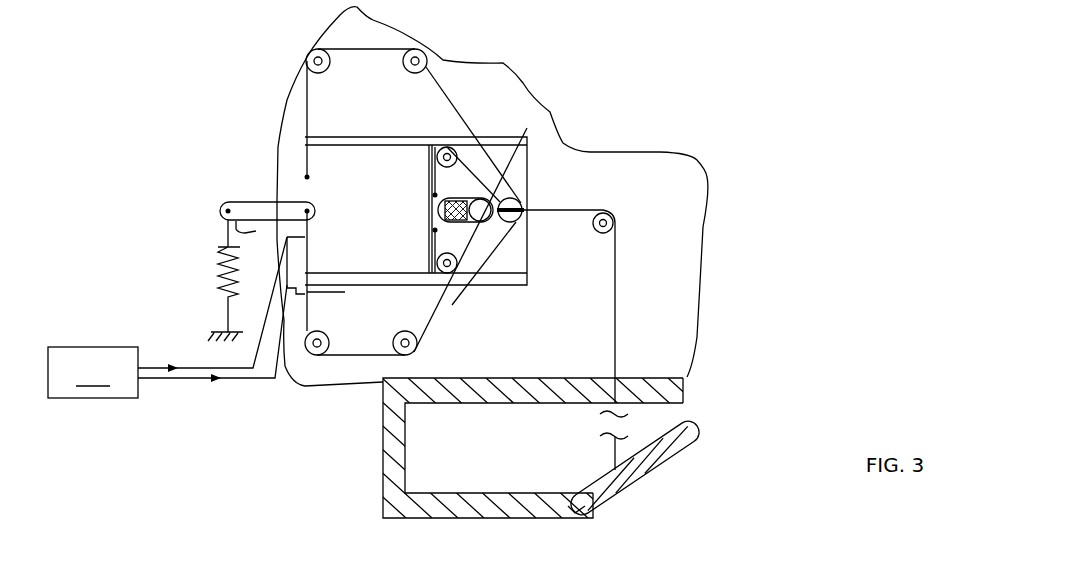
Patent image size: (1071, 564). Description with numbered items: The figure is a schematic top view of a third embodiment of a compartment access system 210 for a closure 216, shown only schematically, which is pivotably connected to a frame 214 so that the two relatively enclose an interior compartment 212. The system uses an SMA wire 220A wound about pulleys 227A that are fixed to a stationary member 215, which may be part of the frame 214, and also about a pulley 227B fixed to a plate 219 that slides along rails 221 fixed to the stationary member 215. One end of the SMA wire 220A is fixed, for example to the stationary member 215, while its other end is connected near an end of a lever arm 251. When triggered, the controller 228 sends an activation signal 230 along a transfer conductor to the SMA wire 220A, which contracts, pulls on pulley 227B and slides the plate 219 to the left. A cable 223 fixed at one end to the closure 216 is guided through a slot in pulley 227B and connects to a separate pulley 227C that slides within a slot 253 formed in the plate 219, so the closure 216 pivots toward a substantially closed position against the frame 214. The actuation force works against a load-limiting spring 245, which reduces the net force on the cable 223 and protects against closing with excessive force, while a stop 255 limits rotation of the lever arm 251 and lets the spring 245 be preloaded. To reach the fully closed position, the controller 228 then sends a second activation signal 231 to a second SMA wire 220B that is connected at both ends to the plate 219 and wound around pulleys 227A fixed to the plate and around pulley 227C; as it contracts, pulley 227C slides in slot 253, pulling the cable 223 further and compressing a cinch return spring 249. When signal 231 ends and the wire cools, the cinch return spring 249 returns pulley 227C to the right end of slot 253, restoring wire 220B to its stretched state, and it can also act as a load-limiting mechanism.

The compartment access system 210 is at (242, 72).
The interior compartment 212 is at (437, 456).
The frame 214 is at (672, 392).
The stationary member 215 is at (707, 212).
The closure 216 is at (673, 453).
The plate 219 is at (520, 168).
The SMA wire 220A is at (338, 357).
The second SMA wire 220B is at (468, 228).
The rails 221 is at (352, 270).
The cable 223 is at (578, 209).
The pulleys 227A is at (321, 72).
The pulley 227B is at (516, 224).
The pulley 227C is at (527, 128).
The controller 228 is at (93, 372).
The activation signal 230 is at (158, 367).
The activation signal 231 is at (195, 379).
The spring 245 is at (220, 265).
The cinch return spring 249 is at (456, 200).
The lever arm 251 is at (260, 200).
The slot 253 is at (437, 211).
The stop 255 is at (243, 235).